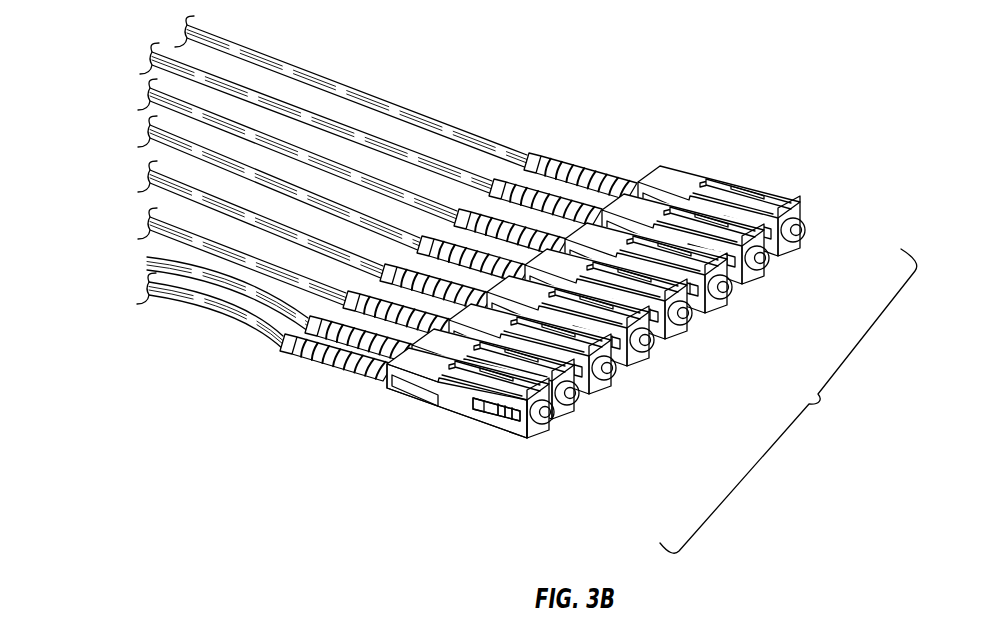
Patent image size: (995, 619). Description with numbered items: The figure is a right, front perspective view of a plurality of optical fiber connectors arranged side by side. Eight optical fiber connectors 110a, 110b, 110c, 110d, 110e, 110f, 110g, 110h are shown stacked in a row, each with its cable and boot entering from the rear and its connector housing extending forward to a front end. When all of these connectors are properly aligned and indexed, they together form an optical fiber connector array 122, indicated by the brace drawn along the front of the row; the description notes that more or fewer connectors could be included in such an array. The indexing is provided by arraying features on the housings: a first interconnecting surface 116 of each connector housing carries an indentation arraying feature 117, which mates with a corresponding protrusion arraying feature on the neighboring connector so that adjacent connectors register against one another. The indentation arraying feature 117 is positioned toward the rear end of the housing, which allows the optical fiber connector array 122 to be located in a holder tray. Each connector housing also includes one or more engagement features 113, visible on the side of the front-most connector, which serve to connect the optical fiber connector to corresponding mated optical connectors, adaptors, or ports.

The optical fiber connector 110a is at (450, 417).
The optical fiber connector 110b is at (573, 408).
The optical fiber connector 110c is at (612, 383).
The optical fiber connector 110d is at (653, 358).
The optical fiber connector 110e is at (689, 334).
The optical fiber connector 110f is at (725, 307).
The optical fiber connector 110g is at (761, 282).
The optical fiber connector 110h is at (798, 252).
The engagement feature 113 is at (502, 418).
The first interconnecting surface 116 is at (480, 420).
The indentation arraying feature 117 is at (405, 388).
The optical fiber connector array 122 is at (788, 401).